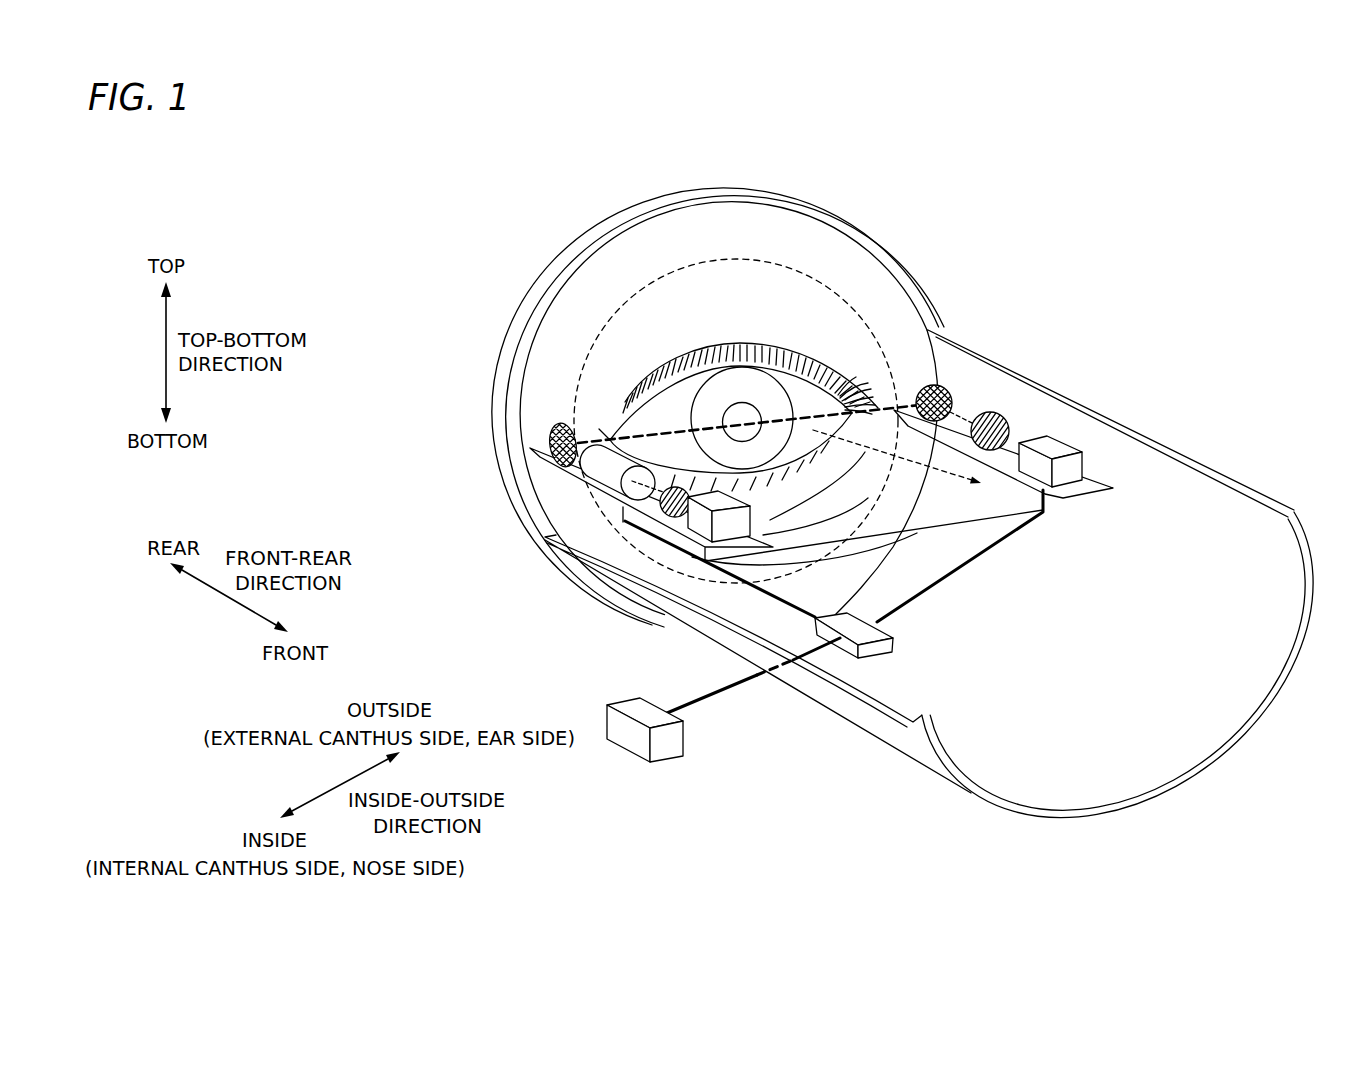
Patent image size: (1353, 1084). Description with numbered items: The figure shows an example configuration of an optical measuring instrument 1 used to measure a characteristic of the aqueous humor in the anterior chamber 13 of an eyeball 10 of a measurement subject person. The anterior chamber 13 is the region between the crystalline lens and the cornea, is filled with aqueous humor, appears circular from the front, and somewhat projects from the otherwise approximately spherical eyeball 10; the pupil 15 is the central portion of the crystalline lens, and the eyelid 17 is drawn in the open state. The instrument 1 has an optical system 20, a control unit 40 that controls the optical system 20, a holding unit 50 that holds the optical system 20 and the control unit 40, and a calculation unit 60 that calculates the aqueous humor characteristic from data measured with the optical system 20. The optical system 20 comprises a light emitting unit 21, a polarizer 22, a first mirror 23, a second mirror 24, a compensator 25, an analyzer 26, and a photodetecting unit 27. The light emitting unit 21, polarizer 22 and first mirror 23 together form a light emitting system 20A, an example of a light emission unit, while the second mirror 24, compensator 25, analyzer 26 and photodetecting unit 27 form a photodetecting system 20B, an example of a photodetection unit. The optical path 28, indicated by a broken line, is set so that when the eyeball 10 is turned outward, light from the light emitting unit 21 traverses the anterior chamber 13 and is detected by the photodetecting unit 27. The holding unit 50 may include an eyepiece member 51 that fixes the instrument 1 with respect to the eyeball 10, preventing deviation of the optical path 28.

The optical measuring instrument 1 is at (1220, 392).
The eyeball 10 is at (700, 260).
The anterior chamber 13 is at (723, 390).
The pupil 15 is at (741, 400).
The eyelid 17 is at (637, 392).
The optical system 20 is at (1125, 487).
The light emitting system 20A is at (969, 272).
The photodetecting system 20B is at (576, 649).
The light emitting unit 21 is at (1052, 442).
The polarizer 22 is at (997, 412).
The first mirror 23 is at (940, 390).
The second mirror 24 is at (553, 460).
The compensator 25 is at (590, 478).
The analyzer 26 is at (666, 512).
The photodetecting unit 27 is at (697, 527).
The optical path 28 is at (827, 403).
The control unit 40 is at (850, 647).
The holding unit 50 is at (910, 762).
The eyepiece member 51 is at (505, 367).
The calculation unit 60 is at (628, 737).